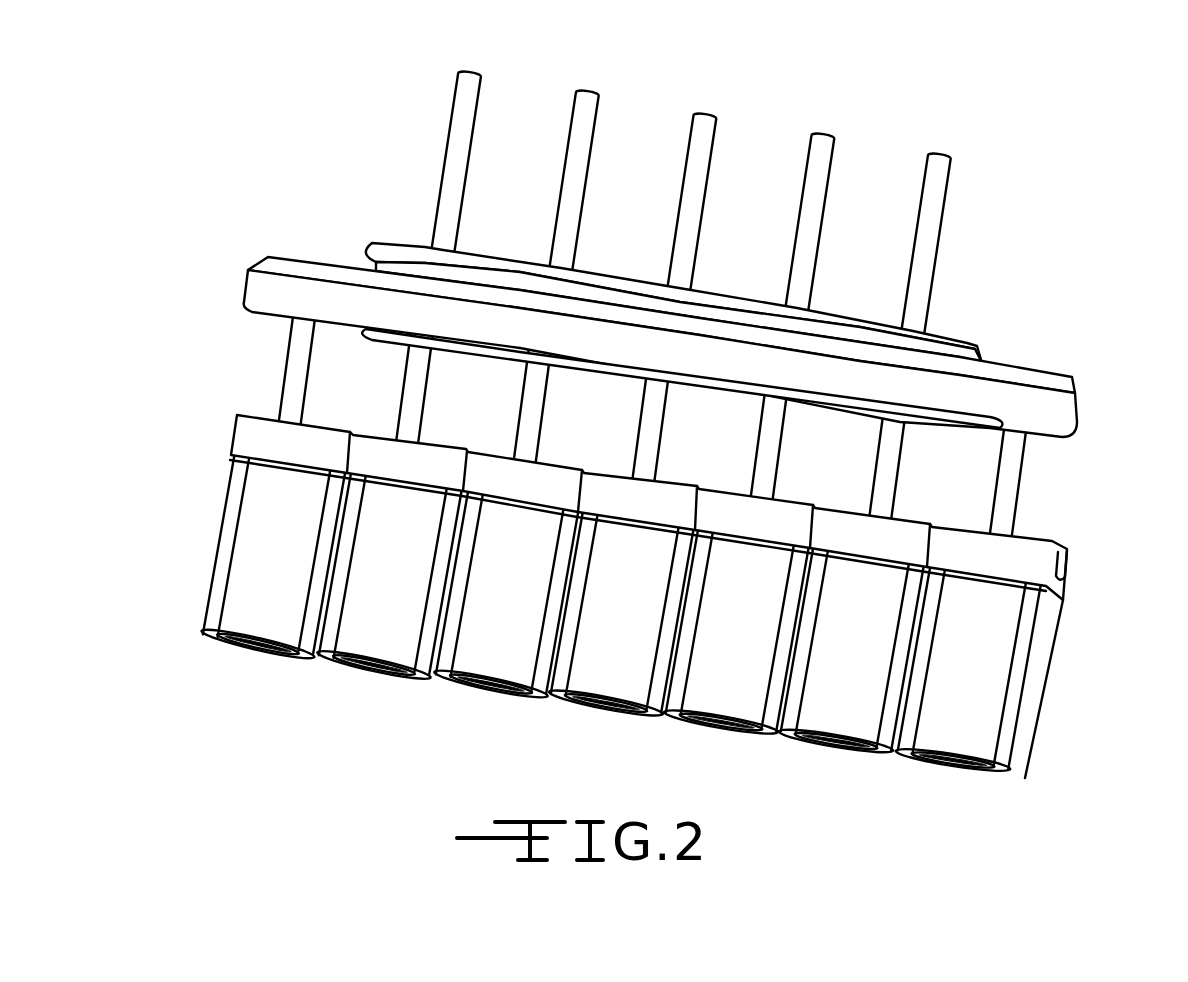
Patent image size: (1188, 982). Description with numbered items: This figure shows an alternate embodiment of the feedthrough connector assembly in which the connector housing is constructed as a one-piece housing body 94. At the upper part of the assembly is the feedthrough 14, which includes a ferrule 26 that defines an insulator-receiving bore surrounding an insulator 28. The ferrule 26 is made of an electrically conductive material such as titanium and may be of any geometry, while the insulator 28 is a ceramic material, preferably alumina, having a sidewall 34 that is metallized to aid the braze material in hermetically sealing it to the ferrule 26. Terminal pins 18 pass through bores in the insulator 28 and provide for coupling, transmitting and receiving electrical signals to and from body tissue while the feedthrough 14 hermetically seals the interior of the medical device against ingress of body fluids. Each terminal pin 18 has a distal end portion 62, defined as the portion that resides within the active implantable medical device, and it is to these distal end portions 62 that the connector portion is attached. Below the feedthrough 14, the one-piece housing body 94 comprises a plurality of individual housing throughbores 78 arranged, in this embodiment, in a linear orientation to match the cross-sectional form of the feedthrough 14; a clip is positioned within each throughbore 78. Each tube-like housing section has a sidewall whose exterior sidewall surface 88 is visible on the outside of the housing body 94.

The feedthrough 14 is at (620, 458).
The terminal pins 18 is at (800, 170).
The ferrule 26 is at (1066, 413).
The insulator 28 is at (932, 348).
The sidewall 34 is at (388, 259).
The distal end portion 62 is at (543, 420).
The housing throughbore 78 is at (268, 658).
The exterior sidewall surface 88 is at (268, 542).
The one-piece housing body 94 is at (1044, 693).